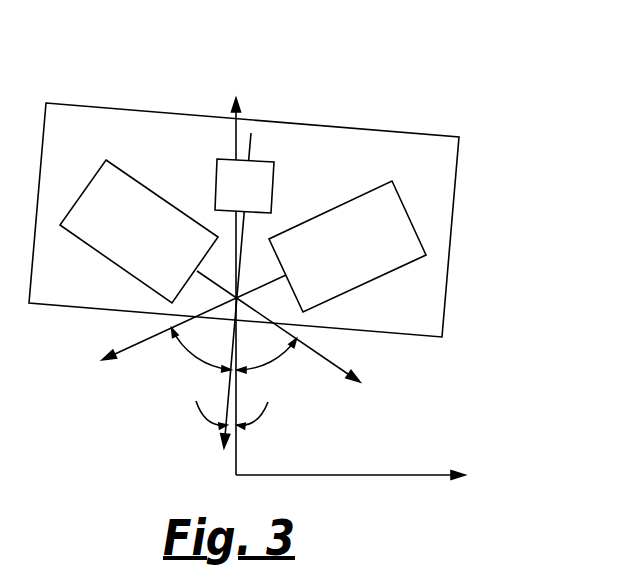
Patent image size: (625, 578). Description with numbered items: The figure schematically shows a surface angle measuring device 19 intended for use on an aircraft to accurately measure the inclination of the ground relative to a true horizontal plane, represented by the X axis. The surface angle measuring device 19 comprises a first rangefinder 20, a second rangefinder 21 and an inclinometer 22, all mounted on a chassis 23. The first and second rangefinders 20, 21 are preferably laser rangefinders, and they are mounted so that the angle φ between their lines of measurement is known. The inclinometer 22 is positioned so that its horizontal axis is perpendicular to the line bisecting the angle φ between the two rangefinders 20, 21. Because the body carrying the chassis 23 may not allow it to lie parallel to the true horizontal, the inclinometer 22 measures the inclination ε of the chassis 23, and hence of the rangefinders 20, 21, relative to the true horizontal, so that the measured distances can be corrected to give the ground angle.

The surface angle measuring device 19 is at (321, 253).
The first rangefinder 20 is at (110, 263).
The second rangefinder 21 is at (357, 288).
The inclinometer 22 is at (273, 201).
The chassis 23 is at (355, 128).